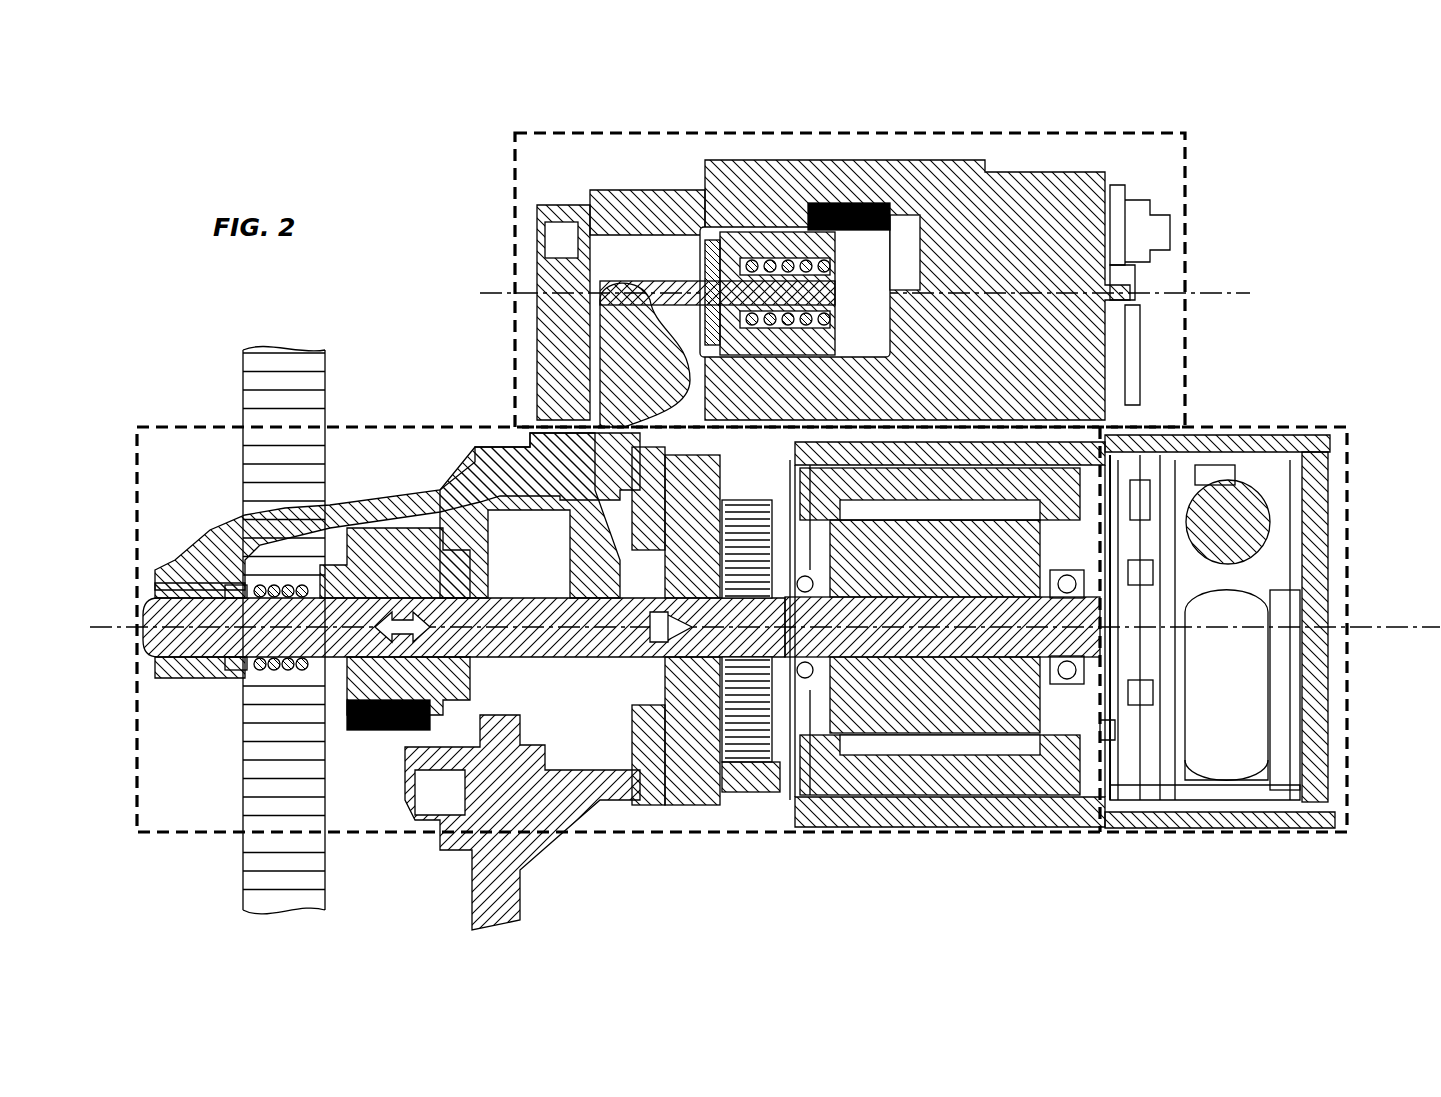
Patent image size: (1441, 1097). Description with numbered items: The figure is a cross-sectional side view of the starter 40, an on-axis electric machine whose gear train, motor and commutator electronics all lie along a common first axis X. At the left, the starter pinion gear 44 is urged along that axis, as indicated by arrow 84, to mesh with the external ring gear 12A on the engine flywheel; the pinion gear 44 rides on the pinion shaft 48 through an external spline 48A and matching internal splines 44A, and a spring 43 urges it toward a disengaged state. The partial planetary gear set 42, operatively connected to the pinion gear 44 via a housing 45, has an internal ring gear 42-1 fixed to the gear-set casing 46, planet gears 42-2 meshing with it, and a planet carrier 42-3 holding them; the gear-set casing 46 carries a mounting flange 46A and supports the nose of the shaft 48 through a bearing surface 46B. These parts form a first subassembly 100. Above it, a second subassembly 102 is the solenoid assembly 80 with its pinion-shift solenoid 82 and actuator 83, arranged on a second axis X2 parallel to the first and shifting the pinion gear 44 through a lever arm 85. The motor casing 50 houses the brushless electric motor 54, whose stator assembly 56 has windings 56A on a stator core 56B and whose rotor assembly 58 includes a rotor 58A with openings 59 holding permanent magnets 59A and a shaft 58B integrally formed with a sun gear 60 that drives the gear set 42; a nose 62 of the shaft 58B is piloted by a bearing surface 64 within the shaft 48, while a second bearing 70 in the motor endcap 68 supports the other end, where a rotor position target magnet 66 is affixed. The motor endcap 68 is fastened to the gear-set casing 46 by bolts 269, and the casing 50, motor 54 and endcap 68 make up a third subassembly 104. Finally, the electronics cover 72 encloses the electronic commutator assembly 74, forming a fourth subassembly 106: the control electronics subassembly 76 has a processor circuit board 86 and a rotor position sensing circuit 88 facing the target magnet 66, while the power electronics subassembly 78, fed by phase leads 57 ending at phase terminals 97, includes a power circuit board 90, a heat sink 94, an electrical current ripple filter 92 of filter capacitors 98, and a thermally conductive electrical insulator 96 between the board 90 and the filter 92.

The second subassembly 102 is at (1088, 133).
The starter 40 is at (1270, 200).
The pinion-shift solenoid 82 is at (792, 235).
The actuator 83 is at (850, 203).
The solenoid assembly 80 is at (935, 190).
The second axis X2 is at (1215, 293).
The lever arm 85 is at (600, 355).
The first subassembly 100 is at (393, 427).
The rotor position target magnet 66 is at (1117, 480).
The control electronics subassembly 76 is at (1138, 522).
The phase leads 57 is at (1190, 432).
The processor circuit board 86 is at (1245, 482).
The phase terminals 97 is at (1288, 470).
The fourth subassembly 106 is at (1310, 427).
The power electronics subassembly 78 is at (1265, 488).
The spring 43 is at (270, 585).
The external spline 48A is at (296, 585).
The arrow 84 is at (405, 598).
The internal splines 44A is at (437, 598).
The second bearing 70 is at (1066, 580).
The heat sink 94 is at (1312, 575).
The thermally conductive electrical insulator 96 is at (1298, 615).
The shaft 58B is at (942, 627).
The filter capacitors 98 is at (1226, 685).
The first axis X is at (1390, 636).
The bearing surface 46B is at (152, 652).
The pinion shaft 48 is at (284, 668).
The starter pinion gear 44 is at (382, 735).
The bearing surface 64 is at (655, 645).
The nose 62 is at (692, 657).
The sun gear 60 is at (708, 660).
The planet carrier 42-3 is at (705, 760).
The rotor 58A is at (935, 626).
The rotor position sensing circuit 88 is at (1122, 652).
The power circuit board 90 is at (1292, 690).
The electrical current ripple filter 92 is at (1292, 750).
The windings 56A is at (940, 631).
The housing 45 is at (548, 720).
The planet gears 42-2 is at (712, 745).
The brushless electric motor 54 is at (797, 700).
The motor casing 50 is at (822, 800).
The openings 59 is at (862, 722).
The permanent magnets 59A is at (1000, 730).
The stator assembly 56 is at (1045, 785).
The rotor assembly 58 is at (1040, 718).
The motor endcap 68 is at (1103, 722).
The bolts 269 is at (1196, 790).
The electronic commutator assembly 74 is at (1232, 800).
The electronics cover 72 is at (1287, 828).
The partial planetary gear set 42 is at (677, 790).
The internal ring gear 42-1 is at (752, 778).
The stator core 56B is at (890, 810).
The third subassembly 104 is at (906, 852).
The gear-set casing 46 is at (548, 872).
The mounting flange 46A is at (472, 858).
The external ring gear 12A is at (243, 875).